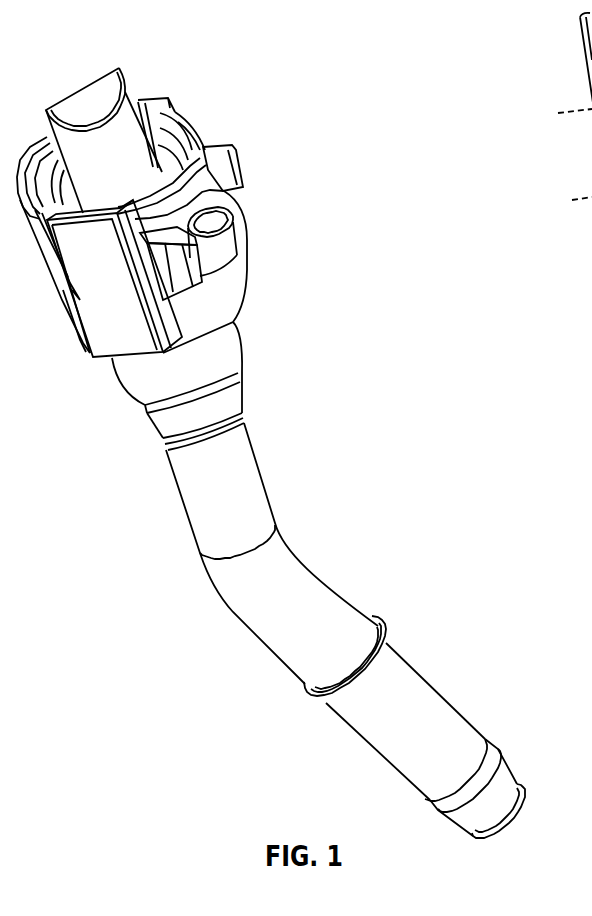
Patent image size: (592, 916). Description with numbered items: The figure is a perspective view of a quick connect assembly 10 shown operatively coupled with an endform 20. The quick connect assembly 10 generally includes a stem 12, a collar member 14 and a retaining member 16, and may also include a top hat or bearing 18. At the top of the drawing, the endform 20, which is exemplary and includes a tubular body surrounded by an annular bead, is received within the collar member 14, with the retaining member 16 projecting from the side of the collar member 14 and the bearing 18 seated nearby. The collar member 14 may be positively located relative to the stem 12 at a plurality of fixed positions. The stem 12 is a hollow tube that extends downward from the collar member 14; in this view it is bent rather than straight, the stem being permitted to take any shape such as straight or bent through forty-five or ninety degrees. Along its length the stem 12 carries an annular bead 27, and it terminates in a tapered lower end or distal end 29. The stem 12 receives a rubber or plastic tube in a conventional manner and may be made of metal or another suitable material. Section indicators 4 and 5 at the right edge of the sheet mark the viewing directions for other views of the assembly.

The quick connect assembly 10 is at (278, 66).
The stem 12 is at (266, 641).
The collar member 14 is at (104, 358).
The retaining member 16 is at (245, 160).
The top hat or bearing 18 is at (222, 232).
The endform 20 is at (118, 70).
The annular bead 27 is at (380, 618).
The tapered lower end or distal end 29 is at (510, 822).
The section line 4- 4 is at (558, 113).
The section line 5- 5 is at (572, 200).